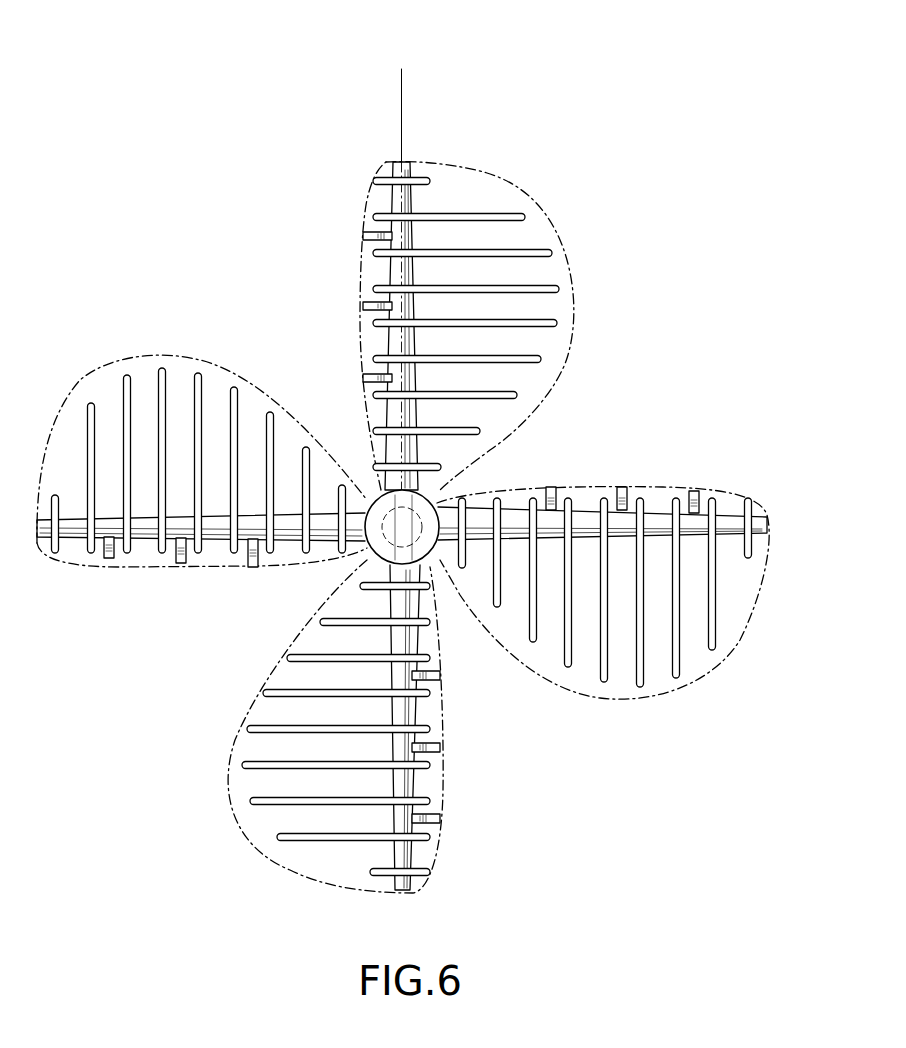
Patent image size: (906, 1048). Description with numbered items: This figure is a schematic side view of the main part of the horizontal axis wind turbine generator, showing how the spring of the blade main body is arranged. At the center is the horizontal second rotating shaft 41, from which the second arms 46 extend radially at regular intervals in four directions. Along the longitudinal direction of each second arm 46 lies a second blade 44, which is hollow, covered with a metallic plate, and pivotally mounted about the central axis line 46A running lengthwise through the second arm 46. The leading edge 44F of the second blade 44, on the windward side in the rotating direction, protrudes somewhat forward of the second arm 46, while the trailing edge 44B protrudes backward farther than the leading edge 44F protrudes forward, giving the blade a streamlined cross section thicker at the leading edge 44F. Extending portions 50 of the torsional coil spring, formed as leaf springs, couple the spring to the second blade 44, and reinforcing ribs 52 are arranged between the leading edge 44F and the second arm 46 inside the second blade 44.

The second rotating shaft 41 is at (402, 527).
The second blade 44 is at (498, 308).
The leading edge 44F is at (362, 258).
The trailing edge 44B is at (567, 345).
The second arm 46 is at (423, 195).
The central axis line 46A is at (400, 100).
The extending portions 50 is at (537, 283).
The reinforcing ribs 52 is at (363, 372).